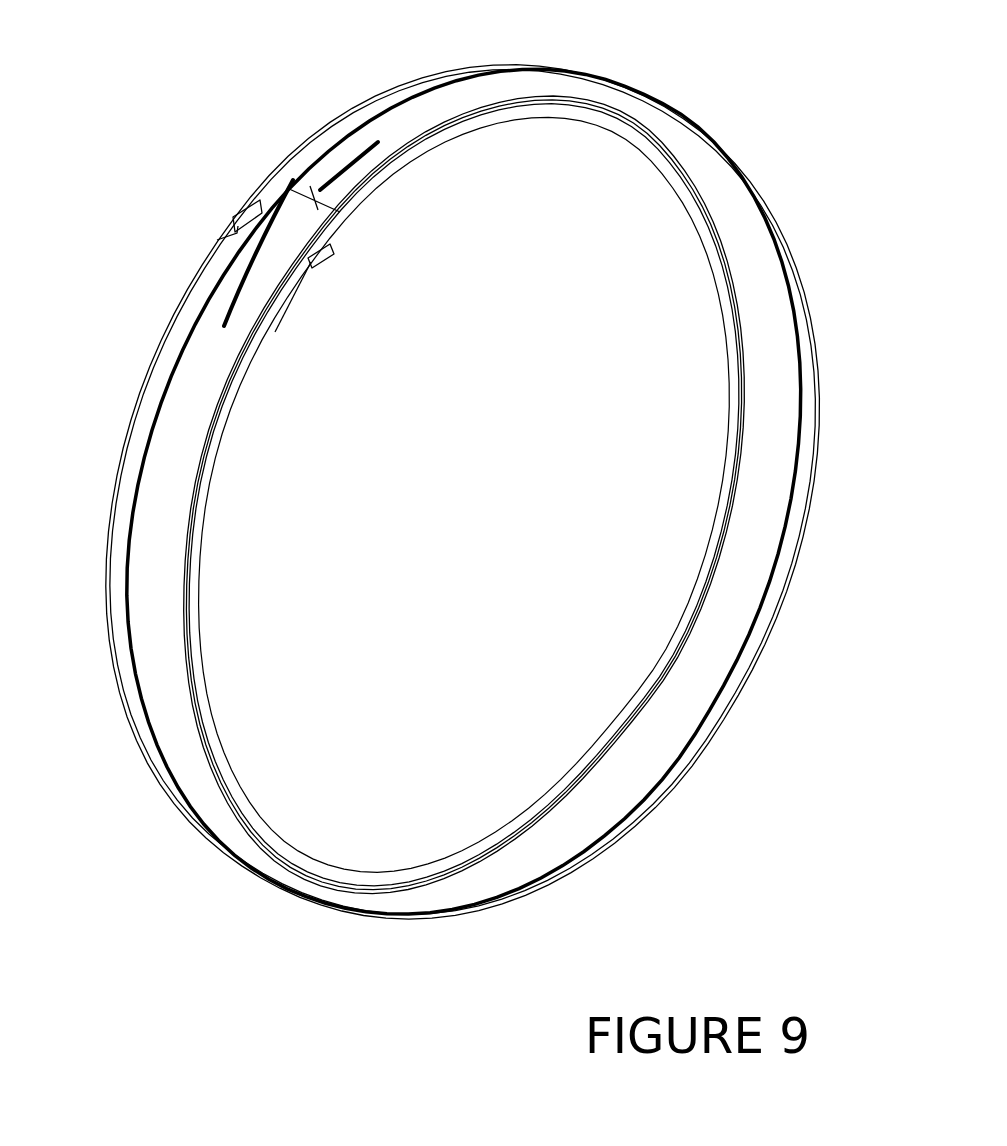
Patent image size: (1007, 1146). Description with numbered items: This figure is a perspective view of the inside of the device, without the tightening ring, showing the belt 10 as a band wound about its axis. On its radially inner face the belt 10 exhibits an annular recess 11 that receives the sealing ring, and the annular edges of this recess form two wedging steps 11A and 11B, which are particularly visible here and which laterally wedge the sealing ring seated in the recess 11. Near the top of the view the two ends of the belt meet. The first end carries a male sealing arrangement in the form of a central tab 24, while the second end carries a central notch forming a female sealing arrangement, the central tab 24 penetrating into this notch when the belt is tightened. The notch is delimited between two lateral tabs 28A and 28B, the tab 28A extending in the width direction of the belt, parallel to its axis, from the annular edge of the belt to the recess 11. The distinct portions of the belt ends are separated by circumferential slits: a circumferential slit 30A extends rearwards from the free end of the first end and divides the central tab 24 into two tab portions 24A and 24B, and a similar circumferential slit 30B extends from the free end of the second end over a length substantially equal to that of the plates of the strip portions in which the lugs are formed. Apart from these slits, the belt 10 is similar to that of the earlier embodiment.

The belt 10 is at (633, 96).
The annular recess 11 is at (157, 444).
The wedging step 11A is at (223, 387).
The wedging step 11B is at (168, 378).
The central tab 24 is at (243, 216).
The tab portion 24A is at (280, 267).
The tab portion 24B is at (247, 257).
The lateral tab 28A is at (331, 250).
The lateral tab 28B is at (259, 200).
The circumferential slit 30A is at (244, 305).
The circumferential slit 30B is at (357, 164).